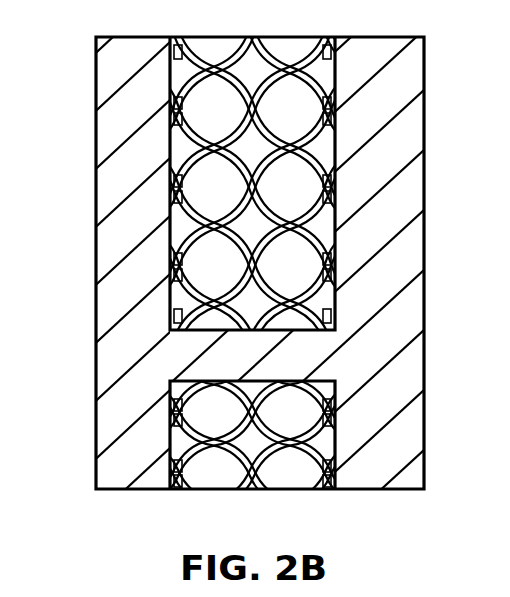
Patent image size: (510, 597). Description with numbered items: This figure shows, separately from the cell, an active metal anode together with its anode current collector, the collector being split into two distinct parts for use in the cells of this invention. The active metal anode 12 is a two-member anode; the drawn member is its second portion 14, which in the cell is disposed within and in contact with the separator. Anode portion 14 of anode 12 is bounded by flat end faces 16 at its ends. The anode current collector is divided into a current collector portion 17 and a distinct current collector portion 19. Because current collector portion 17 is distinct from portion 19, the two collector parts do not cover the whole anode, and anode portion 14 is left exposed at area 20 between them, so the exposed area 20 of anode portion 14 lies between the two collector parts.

The active metal anode 12 is at (428, 260).
The second portion of anode 14 is at (405, 191).
The flat end faces 16 is at (118, 80).
The current collector portion 17 is at (335, 322).
The current collector portion 19 is at (330, 492).
The exposed area 20 is at (310, 365).